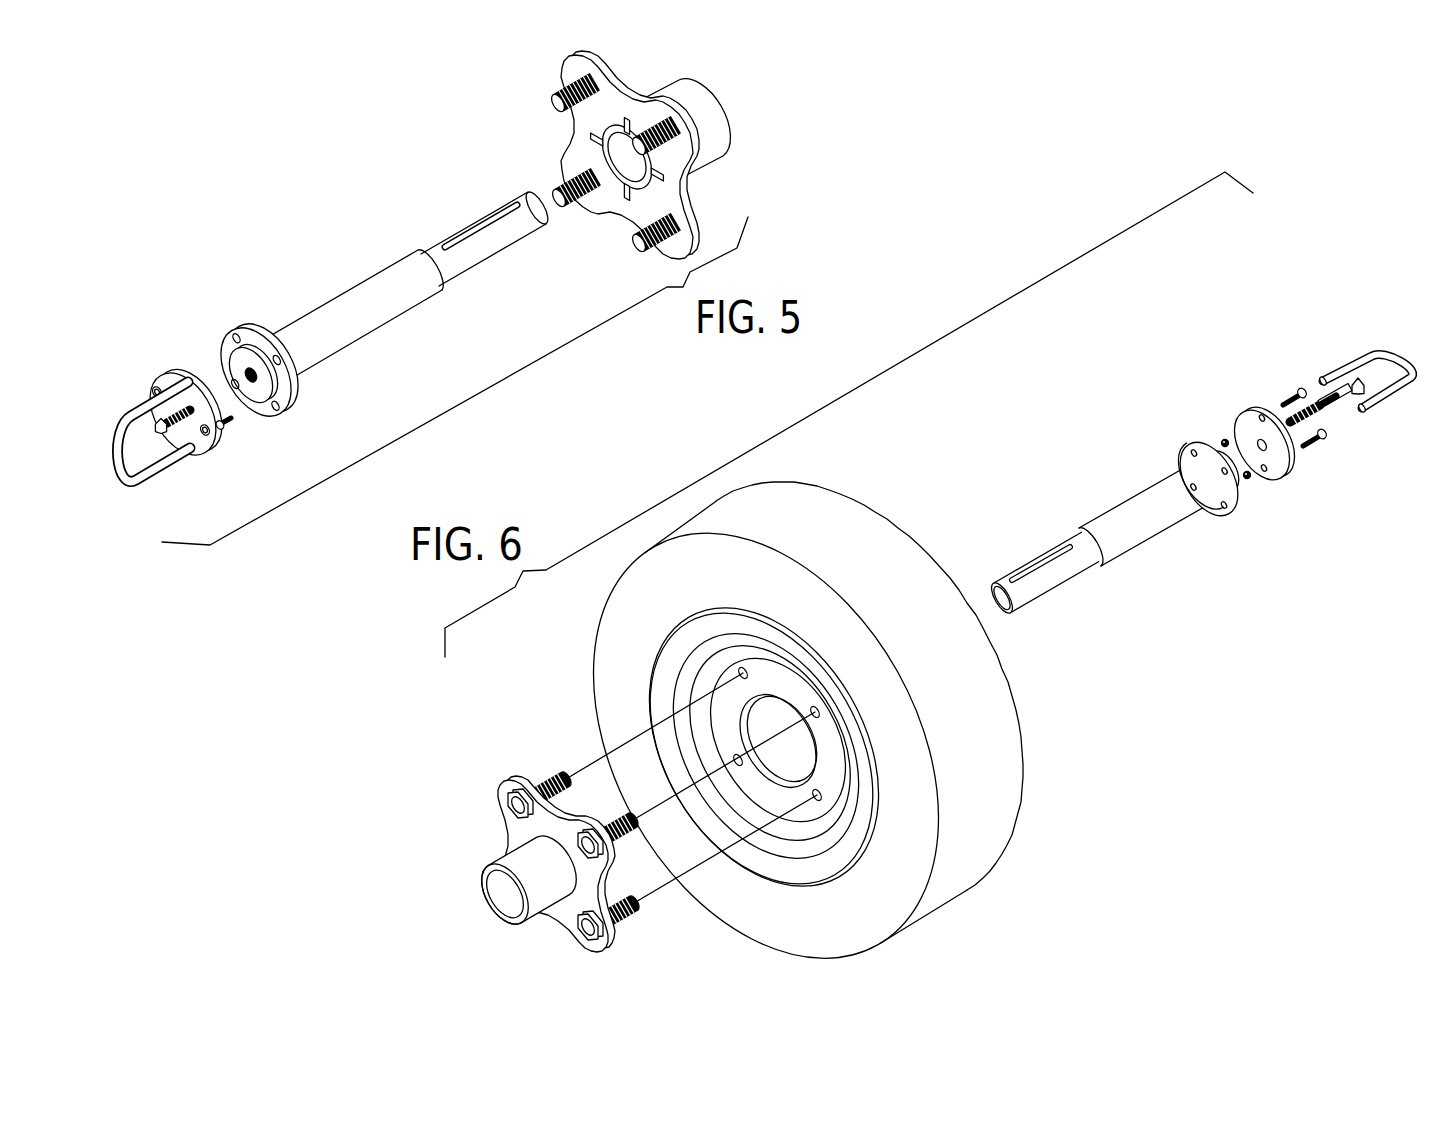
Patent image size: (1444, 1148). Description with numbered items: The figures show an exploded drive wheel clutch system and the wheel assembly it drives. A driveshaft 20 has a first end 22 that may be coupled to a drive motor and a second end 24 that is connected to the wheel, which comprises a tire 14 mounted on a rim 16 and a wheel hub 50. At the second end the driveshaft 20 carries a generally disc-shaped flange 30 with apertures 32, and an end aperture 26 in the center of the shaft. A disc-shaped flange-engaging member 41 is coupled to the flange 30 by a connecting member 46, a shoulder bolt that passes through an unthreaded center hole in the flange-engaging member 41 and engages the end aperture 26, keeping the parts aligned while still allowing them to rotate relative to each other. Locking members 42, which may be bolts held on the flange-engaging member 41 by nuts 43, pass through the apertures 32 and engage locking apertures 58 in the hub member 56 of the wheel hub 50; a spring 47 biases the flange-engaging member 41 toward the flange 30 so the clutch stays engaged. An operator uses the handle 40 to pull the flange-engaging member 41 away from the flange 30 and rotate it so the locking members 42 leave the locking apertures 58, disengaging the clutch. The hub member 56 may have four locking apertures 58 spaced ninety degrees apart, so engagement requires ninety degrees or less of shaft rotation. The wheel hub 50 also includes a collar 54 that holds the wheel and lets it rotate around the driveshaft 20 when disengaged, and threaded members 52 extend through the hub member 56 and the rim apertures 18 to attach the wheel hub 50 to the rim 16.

In FIG. 6, the tire 14 is at (757, 717).
In FIG. 6, the rim 16 is at (707, 620).
In FIG. 6, the rim apertures 18 is at (740, 671).
In FIG. 5, the driveshaft 20 is at (400, 290).
In FIG. 6, the driveshaft 20 is at (1130, 513).
In FIG. 5, the first end 22 is at (553, 222).
In FIG. 5, the second end 24 is at (237, 363).
In FIG. 5, the end aperture 26 is at (253, 383).
In FIG. 5, the flange 30 is at (237, 358).
In FIG. 6, the flange 30 is at (1183, 453).
In FIG. 5, the apertures 32 is at (237, 333).
In FIG. 5, the handle 40 is at (117, 453).
In FIG. 6, the handle 40 is at (1337, 367).
In FIG. 6, the flange-engaging member 41 is at (1247, 408).
In FIG. 5, the locking members 42 is at (172, 370).
In FIG. 6, the locking members 42 is at (1302, 390).
In FIG. 6, the nuts 43 is at (1220, 442).
In FIG. 5, the connecting member 46 is at (153, 437).
In FIG. 6, the connecting member 46 is at (1375, 360).
In FIG. 5, the spring 47 is at (182, 420).
In FIG. 6, the spring 47 is at (1323, 408).
In FIG. 5, the wheel hub 50 is at (619, 172).
In FIG. 6, the wheel hub 50 is at (495, 851).
In FIG. 5, the threaded members 52 is at (557, 97).
In FIG. 6, the threaded members 52 is at (515, 805).
In FIG. 5, the collar 54 is at (717, 127).
In FIG. 6, the collar 54 is at (503, 866).
In FIG. 5, the hub member 56 is at (617, 95).
In FIG. 5, the locking apertures 58 is at (682, 107).